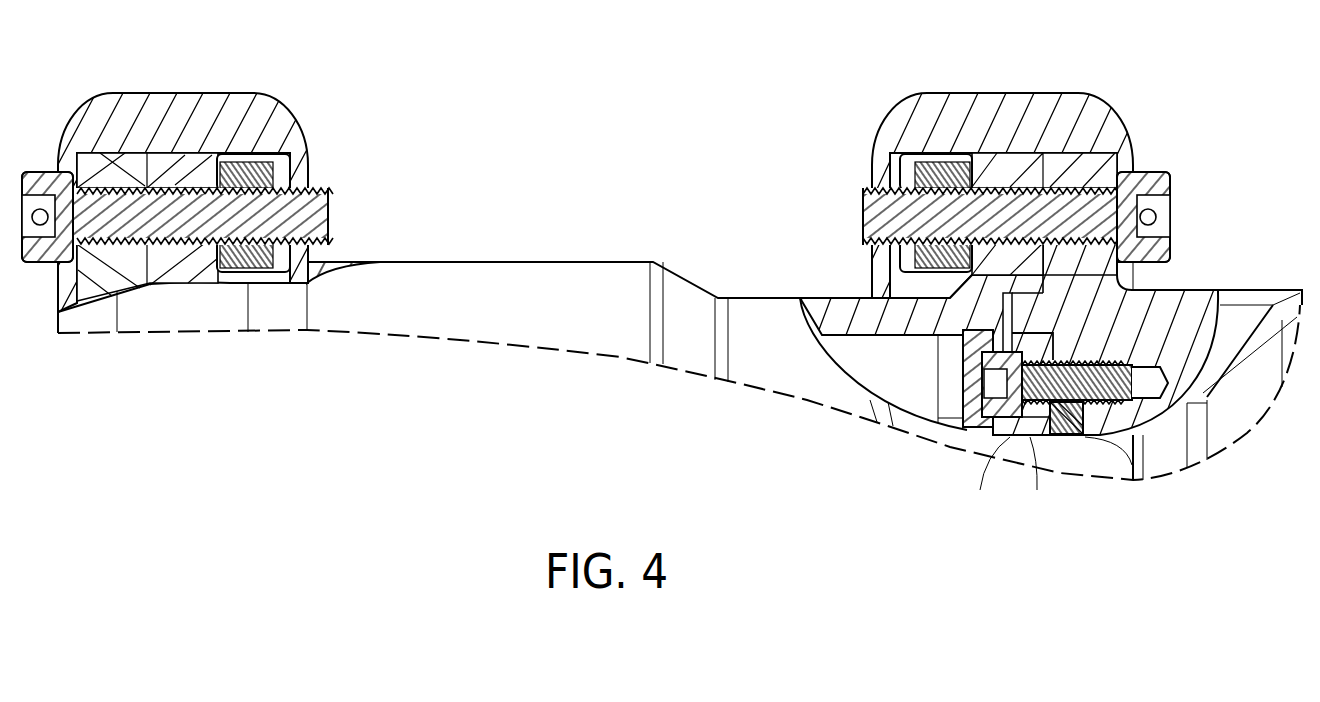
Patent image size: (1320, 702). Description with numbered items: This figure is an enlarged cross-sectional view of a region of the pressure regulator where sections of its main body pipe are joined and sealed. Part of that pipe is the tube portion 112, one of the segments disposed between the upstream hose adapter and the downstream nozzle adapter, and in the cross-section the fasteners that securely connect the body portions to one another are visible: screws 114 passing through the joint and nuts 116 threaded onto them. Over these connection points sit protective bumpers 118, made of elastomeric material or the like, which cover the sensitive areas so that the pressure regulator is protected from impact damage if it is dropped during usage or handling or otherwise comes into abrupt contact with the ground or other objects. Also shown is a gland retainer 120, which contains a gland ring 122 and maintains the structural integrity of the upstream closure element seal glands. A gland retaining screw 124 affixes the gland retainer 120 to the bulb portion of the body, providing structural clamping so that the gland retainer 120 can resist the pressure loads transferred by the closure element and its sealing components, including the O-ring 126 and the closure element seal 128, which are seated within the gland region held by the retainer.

The tube portion 112 is at (603, 275).
The screws 114 is at (33, 170).
The nuts 116 is at (250, 167).
The protective bumpers 118 is at (172, 93).
The gland retainer 120 is at (1087, 307).
The gland ring 122 is at (1030, 437).
The gland retaining screw 124 is at (1008, 432).
The O-ring 126 is at (1072, 437).
The closure element seal 128 is at (1075, 440).